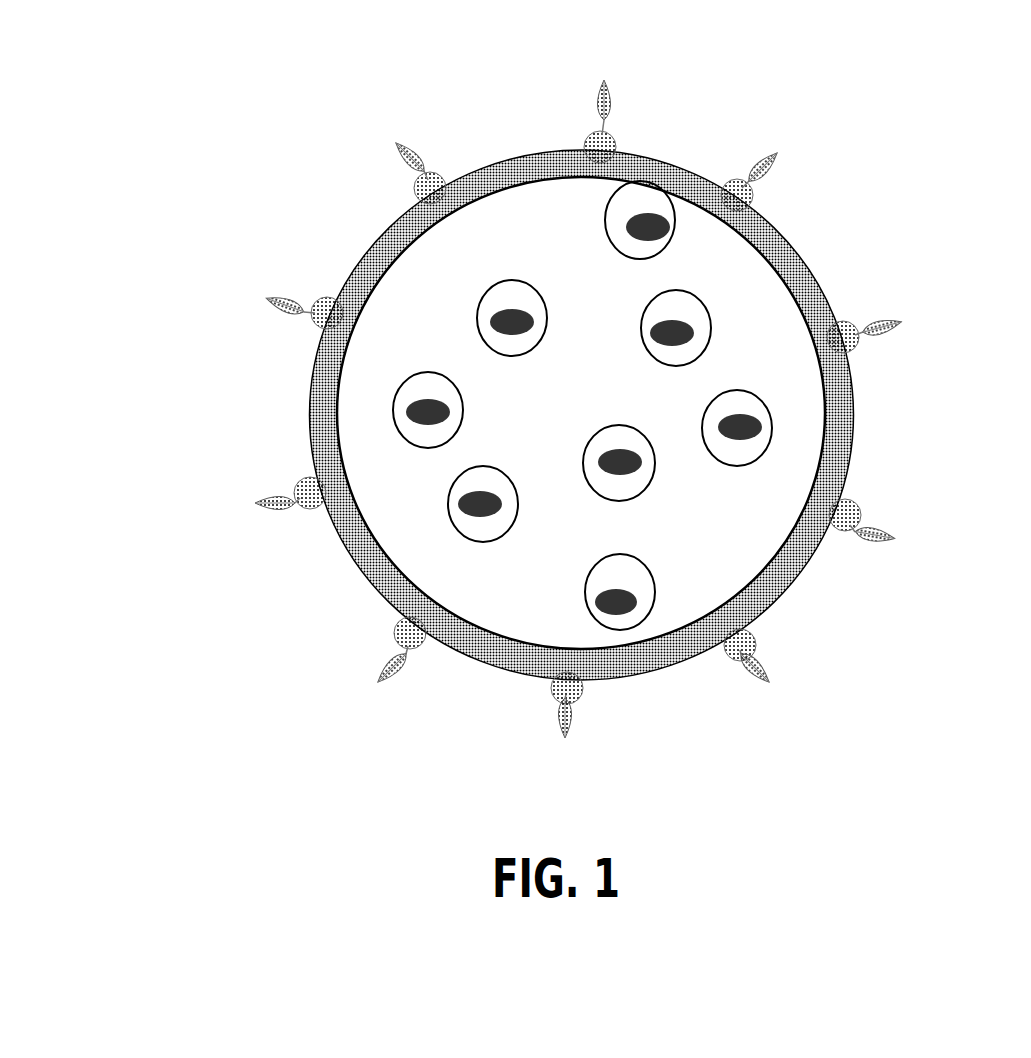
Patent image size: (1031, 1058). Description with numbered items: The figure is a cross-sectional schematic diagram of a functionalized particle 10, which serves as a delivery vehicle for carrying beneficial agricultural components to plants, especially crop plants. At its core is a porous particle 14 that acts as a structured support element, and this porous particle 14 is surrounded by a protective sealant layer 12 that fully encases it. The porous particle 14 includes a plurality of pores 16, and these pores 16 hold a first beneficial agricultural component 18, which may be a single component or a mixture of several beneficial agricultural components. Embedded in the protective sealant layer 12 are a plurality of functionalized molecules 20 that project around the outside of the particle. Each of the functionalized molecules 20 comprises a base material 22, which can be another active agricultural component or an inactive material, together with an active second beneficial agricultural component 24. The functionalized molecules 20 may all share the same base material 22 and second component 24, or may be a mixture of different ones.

The functionalized particle 10 is at (534, 392).
The protective sealant layer 12 is at (775, 247).
The porous particle 14 is at (786, 447).
The pores 16 is at (645, 490).
The first beneficial agricultural component 18 is at (467, 500).
The functionalized molecules 20 is at (250, 505).
The base material 22 is at (323, 315).
The active second beneficial agricultural component 24 is at (403, 153).